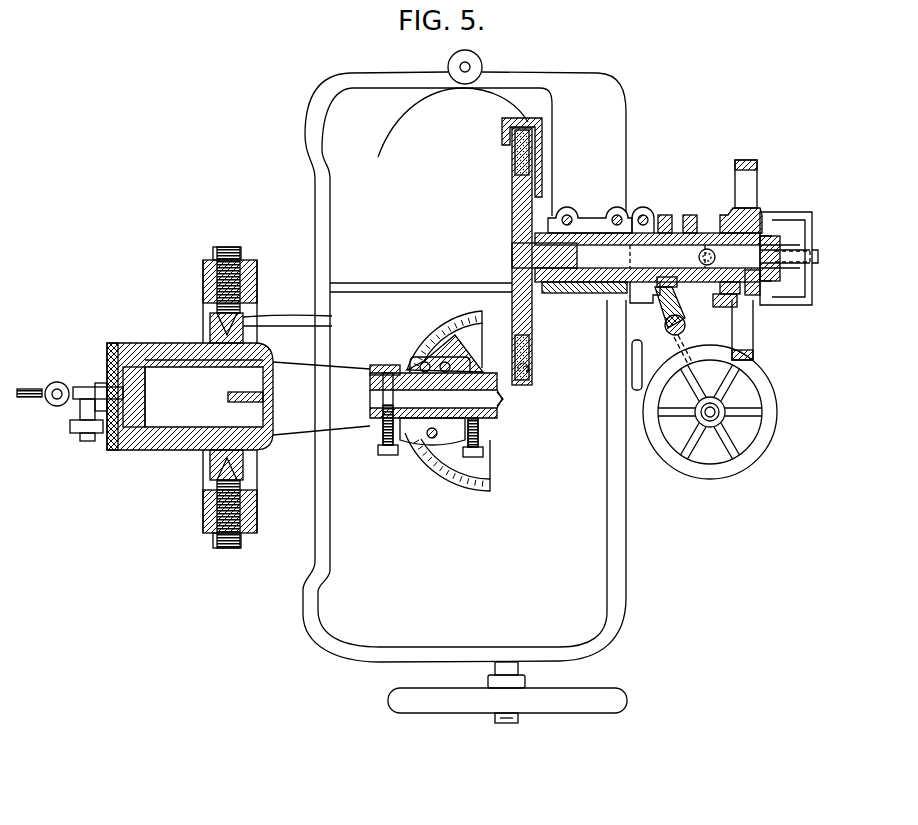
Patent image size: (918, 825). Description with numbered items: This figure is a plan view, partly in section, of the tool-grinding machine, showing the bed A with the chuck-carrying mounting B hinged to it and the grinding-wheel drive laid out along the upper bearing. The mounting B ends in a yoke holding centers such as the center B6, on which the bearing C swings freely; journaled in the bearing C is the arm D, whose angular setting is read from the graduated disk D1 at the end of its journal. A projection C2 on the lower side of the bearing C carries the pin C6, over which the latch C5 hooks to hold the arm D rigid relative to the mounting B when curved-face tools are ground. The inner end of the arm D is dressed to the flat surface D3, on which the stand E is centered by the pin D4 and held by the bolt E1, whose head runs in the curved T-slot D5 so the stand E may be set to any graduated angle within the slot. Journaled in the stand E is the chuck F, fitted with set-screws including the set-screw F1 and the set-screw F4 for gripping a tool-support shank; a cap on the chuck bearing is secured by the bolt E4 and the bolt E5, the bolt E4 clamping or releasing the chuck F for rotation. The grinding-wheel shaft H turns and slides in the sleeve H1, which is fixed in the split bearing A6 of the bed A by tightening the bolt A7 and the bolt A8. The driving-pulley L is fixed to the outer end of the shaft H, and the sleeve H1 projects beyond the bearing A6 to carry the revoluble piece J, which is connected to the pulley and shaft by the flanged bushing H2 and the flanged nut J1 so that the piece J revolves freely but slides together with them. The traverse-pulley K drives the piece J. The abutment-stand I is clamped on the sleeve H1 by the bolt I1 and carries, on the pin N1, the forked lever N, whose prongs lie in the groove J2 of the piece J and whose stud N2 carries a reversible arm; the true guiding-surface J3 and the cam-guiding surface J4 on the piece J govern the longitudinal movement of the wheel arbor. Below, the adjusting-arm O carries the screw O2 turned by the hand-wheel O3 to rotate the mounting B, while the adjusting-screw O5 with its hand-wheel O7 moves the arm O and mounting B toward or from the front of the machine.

The bed A is at (464, 356).
The bearing A6 is at (550, 295).
The bolt A7 is at (567, 215).
The bolt A8 is at (617, 215).
The mounting B is at (203, 288).
The center B6 is at (215, 257).
The bearing C is at (170, 348).
The projection C2 is at (80, 385).
The latch C5 is at (65, 430).
The pin C6 is at (88, 441).
The arm D is at (306, 375).
The graduated disk D1 is at (107, 350).
The flat surface D3 is at (492, 484).
The pin D4 is at (505, 401).
The curved T-slot D5 is at (486, 333).
The stand E is at (407, 368).
The bolt E1 is at (424, 361).
The bolt E4 is at (435, 438).
The bolt E5 is at (451, 351).
The chuck F is at (436, 394).
The set-screw F1 is at (483, 453).
The set-screw F4 is at (388, 428).
The shaft H is at (672, 257).
The sleeve H1 is at (588, 293).
The flanged bushing H2 is at (760, 295).
The abutment-stand I is at (645, 299).
The bolt I1 is at (643, 215).
The revoluble piece J is at (700, 214).
The flanged nut J1 is at (770, 298).
The groove J2 is at (670, 245).
The true guiding-surface J3 is at (700, 214).
The cam-guiding surface J4 is at (739, 211).
The traverse-pulley K is at (744, 248).
The driving-pulley L is at (789, 244).
The forked lever N is at (687, 308).
The pin N1 is at (658, 352).
The stud N2 is at (694, 344).
The adjusting-arm O is at (640, 438).
The screw O2 is at (710, 412).
The hand-wheel O3 is at (736, 427).
The adjusting-screw O5 is at (527, 674).
The hand-wheel O7 is at (507, 705).